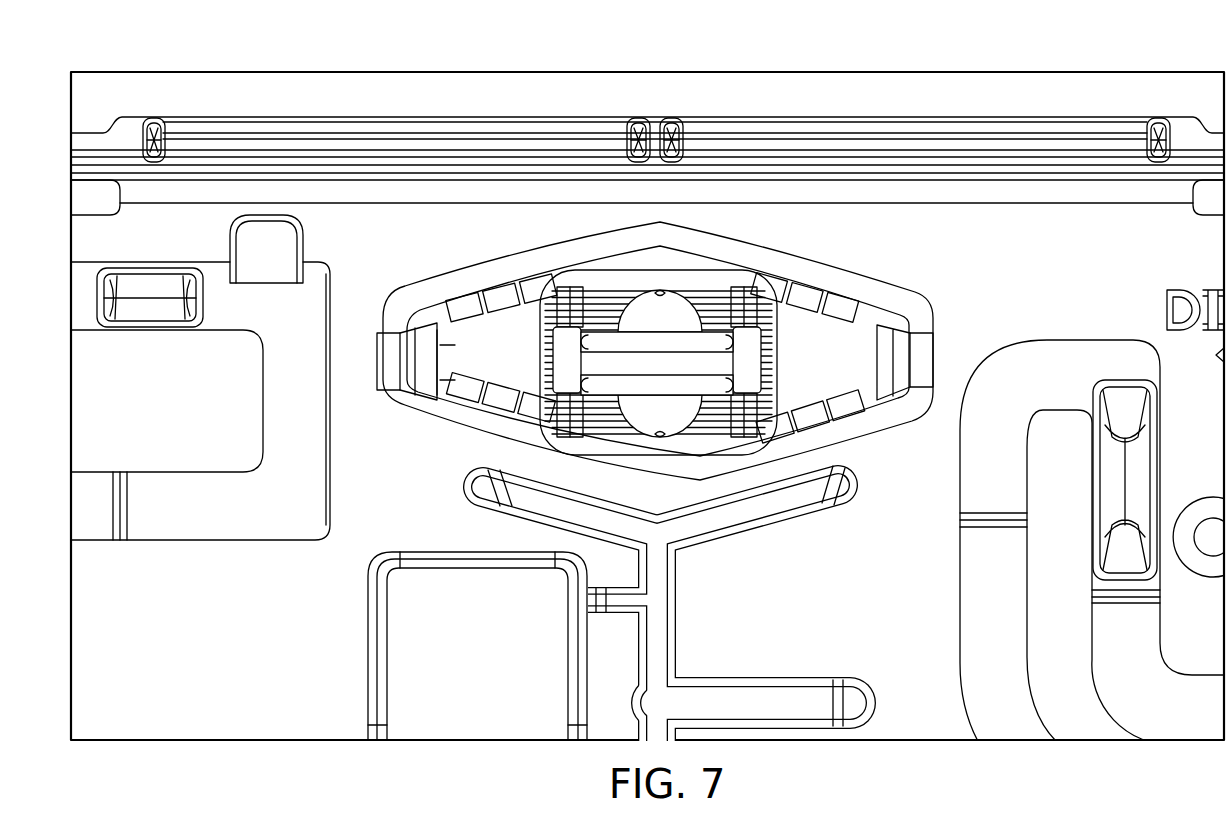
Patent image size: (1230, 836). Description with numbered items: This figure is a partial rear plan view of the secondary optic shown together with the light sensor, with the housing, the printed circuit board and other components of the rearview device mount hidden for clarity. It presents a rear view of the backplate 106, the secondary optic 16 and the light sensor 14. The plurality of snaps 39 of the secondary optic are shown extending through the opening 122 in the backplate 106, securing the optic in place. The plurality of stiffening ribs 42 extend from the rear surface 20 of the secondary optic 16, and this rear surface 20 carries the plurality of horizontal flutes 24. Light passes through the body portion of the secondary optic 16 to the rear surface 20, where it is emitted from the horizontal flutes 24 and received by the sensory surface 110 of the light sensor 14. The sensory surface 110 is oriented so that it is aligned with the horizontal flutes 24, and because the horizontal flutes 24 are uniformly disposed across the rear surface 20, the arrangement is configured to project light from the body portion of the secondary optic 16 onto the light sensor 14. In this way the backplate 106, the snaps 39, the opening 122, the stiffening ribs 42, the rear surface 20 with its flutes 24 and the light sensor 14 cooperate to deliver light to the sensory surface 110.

The backplate 106 is at (948, 95).
The opening 122 is at (550, 250).
The stiffening ribs 42 is at (493, 293).
The snaps 39 is at (396, 347).
The secondary optic 16 is at (800, 317).
The light sensor 14 is at (572, 360).
The sensory surface 110 is at (697, 323).
The horizontal flutes 24 is at (627, 410).
The rear surface 20 is at (453, 373).